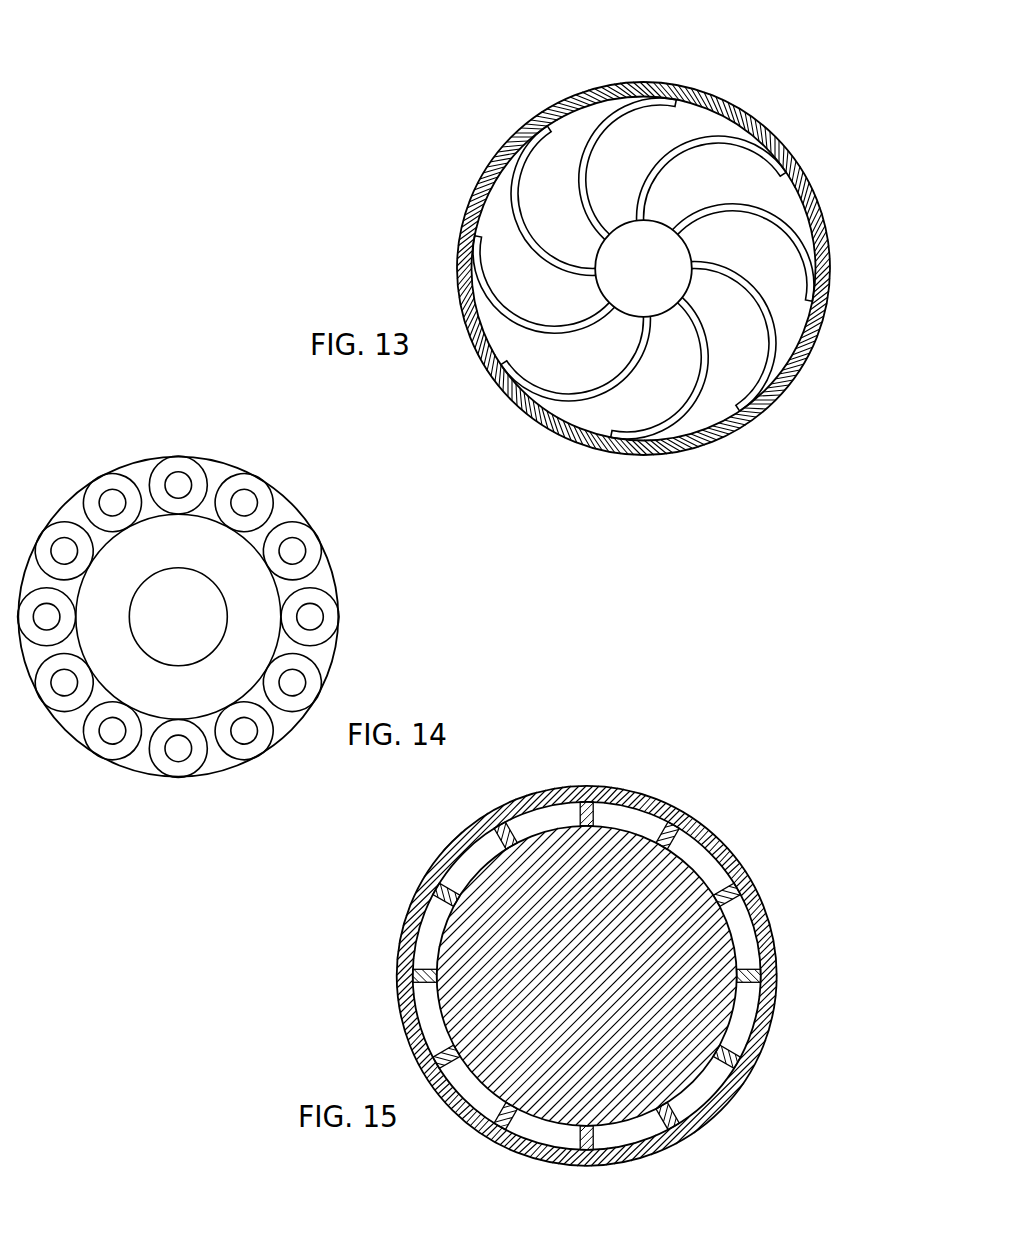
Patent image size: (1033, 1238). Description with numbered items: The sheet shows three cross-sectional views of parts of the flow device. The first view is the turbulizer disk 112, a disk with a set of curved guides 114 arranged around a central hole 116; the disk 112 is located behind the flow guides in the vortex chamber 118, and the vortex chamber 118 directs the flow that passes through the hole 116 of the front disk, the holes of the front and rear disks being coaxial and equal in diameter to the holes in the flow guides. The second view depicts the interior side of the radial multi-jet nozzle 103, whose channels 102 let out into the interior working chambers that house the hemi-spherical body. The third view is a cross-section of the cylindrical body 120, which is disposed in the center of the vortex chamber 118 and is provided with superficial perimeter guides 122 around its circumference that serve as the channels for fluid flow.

In FIG. 13, the turbulizer disk 112 is at (541, 65).
In FIG. 13, the curved guides 114 is at (688, 142).
In FIG. 13, the central hole 116 is at (667, 302).
In FIG. 14, the multi-lumen assembly 103 is at (65, 462).
In FIG. 14, the channels 102 is at (253, 487).
In FIG. 15, the vortex chamber 118 is at (726, 776).
In FIG. 15, the cylindrical body 120 is at (535, 862).
In FIG. 15, the superficial perimeter guides 122 is at (750, 978).